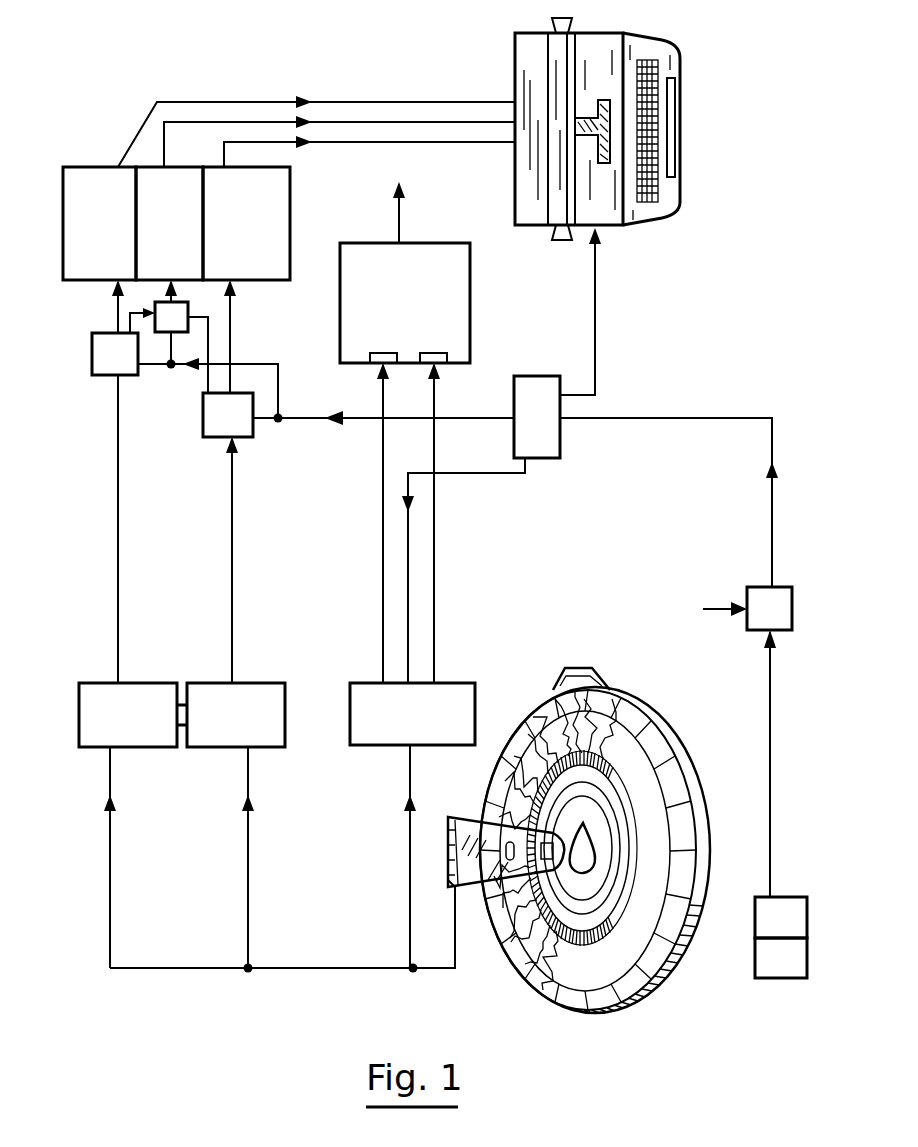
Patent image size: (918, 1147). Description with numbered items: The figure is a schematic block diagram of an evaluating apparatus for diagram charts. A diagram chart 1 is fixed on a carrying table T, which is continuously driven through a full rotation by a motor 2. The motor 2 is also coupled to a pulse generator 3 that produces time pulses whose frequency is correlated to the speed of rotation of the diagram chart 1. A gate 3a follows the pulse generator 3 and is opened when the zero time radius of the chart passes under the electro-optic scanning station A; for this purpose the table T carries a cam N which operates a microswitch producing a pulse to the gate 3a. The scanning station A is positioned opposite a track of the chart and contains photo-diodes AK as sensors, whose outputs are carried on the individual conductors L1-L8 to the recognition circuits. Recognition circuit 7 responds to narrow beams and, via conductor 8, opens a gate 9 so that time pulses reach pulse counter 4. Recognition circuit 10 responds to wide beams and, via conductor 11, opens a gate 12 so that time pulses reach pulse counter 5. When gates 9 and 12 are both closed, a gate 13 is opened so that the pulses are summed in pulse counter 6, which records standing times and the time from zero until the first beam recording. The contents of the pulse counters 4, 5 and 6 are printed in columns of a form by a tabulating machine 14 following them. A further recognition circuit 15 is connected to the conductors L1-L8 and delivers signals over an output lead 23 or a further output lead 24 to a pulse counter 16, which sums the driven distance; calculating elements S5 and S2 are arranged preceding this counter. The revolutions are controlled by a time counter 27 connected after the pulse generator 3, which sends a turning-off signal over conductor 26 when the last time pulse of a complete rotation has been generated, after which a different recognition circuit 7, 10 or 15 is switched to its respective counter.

The diagram chart 1 is at (600, 821).
The motor 2 is at (766, 990).
The pulse generator 3 is at (770, 915).
The gate 3a is at (752, 622).
The pulse counter 4 is at (106, 180).
The pulse counter 5 is at (282, 206).
The pulse counter 6 is at (178, 180).
The recognition circuit 7 is at (108, 700).
The conductor 8 is at (112, 550).
The gate 9 is at (107, 345).
The recognition circuit 10 is at (218, 700).
The conductor 11 is at (230, 550).
The gate 12 is at (212, 417).
The gate 13 is at (182, 318).
The tabulating machine 14 is at (660, 148).
The recognition circuit 15 is at (370, 700).
The pulse counter 16 is at (427, 272).
The output lead 23 is at (382, 572).
The output lead 24 is at (434, 620).
The conductor 26 is at (410, 557).
The time counter 27 is at (536, 400).
The scanning station A is at (476, 840).
The photo-diodes AK is at (447, 873).
The cam N is at (574, 681).
The table T is at (692, 940).
The calculating element S5 is at (380, 344).
The calculating element S2 is at (430, 344).
The conductors L1-L8 is at (283, 968).